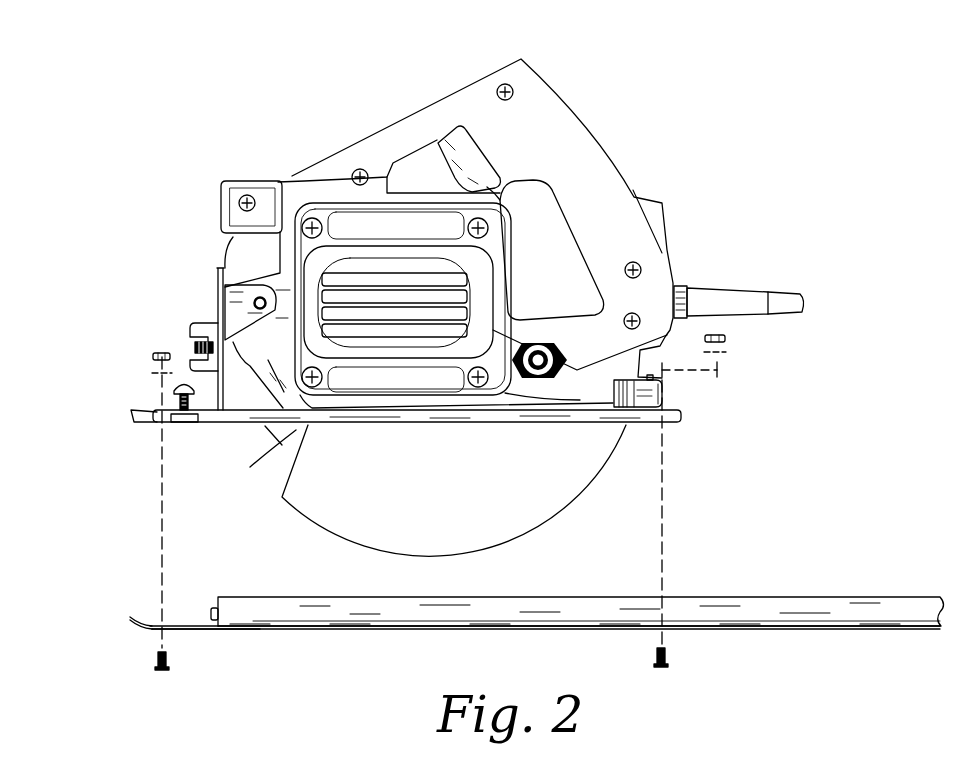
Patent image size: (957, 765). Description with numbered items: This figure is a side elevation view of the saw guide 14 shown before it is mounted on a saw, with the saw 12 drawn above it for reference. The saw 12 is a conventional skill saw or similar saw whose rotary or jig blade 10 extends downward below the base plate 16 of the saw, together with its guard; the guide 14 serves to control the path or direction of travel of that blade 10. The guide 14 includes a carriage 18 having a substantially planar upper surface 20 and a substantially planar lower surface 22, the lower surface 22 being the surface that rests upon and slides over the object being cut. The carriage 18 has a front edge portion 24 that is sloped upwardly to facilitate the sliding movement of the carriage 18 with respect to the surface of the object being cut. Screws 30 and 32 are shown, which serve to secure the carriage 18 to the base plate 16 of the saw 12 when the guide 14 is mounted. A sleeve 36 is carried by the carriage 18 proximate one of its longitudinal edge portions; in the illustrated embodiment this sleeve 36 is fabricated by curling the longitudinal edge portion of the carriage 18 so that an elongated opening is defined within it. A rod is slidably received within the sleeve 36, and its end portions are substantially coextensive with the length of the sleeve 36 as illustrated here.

The blade 10 is at (288, 447).
The saw 12 is at (576, 86).
The saw guide 14 is at (581, 572).
The base plate 16 is at (233, 418).
The carriage 18 is at (498, 628).
The upper surface 20 is at (188, 625).
The lower surface 22 is at (197, 630).
The front edge portion 24 is at (145, 614).
The screw 30 is at (155, 663).
The screw 32 is at (667, 657).
The sleeve 36 is at (338, 600).